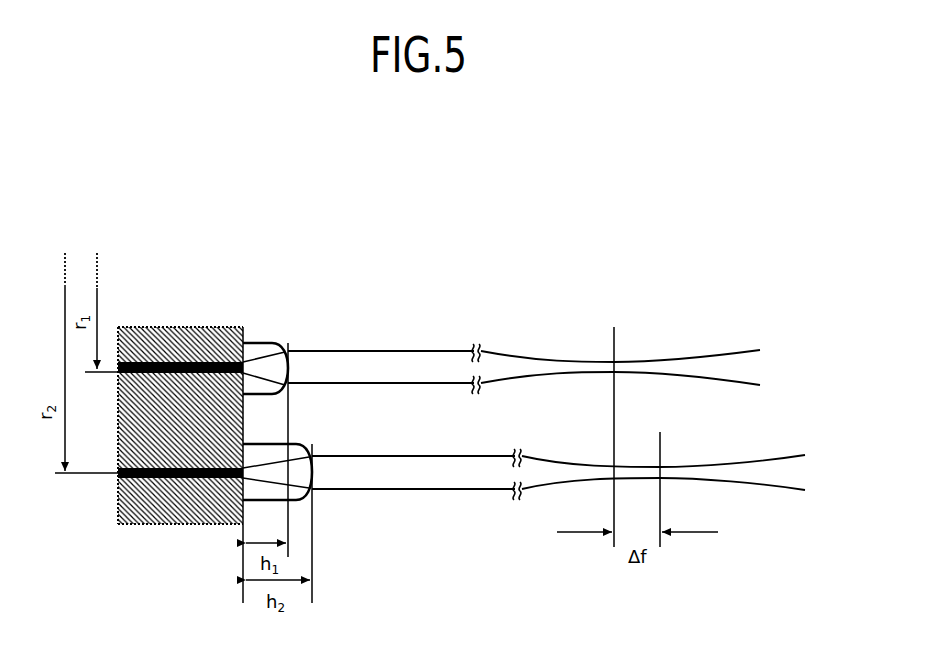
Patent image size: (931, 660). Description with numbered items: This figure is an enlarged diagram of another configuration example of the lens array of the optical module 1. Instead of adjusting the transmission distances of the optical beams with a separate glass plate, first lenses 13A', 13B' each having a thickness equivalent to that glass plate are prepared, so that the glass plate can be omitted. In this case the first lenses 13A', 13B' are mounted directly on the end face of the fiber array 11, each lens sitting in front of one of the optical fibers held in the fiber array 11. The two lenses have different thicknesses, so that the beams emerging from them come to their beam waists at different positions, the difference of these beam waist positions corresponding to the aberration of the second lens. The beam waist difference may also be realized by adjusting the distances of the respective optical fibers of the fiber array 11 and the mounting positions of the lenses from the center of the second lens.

The optical module 1 is at (171, 204).
The fiber array 11 is at (160, 327).
The first lens 13A' is at (278, 339).
The first lens 13B' is at (294, 444).